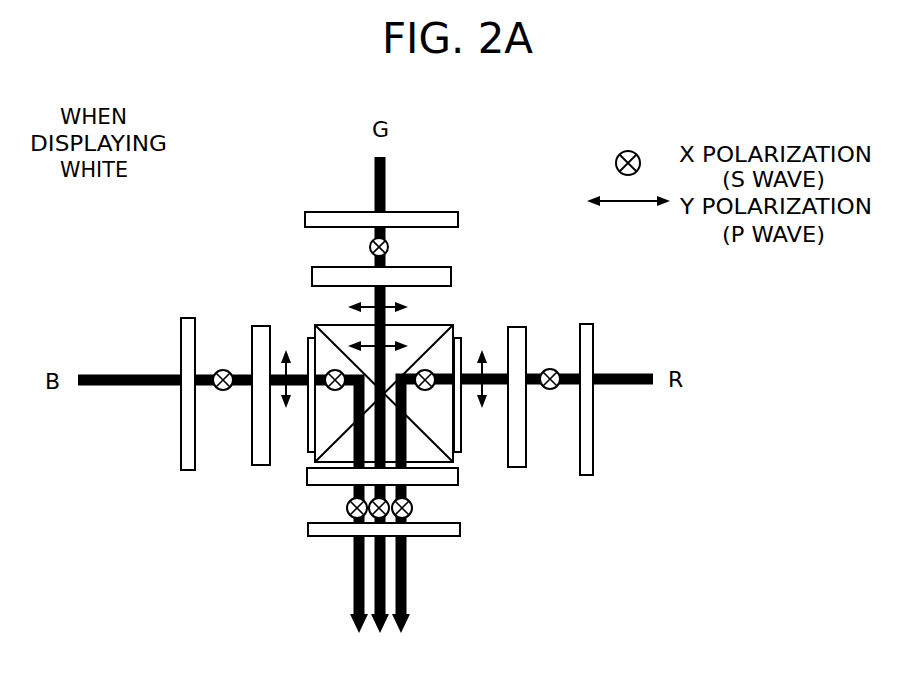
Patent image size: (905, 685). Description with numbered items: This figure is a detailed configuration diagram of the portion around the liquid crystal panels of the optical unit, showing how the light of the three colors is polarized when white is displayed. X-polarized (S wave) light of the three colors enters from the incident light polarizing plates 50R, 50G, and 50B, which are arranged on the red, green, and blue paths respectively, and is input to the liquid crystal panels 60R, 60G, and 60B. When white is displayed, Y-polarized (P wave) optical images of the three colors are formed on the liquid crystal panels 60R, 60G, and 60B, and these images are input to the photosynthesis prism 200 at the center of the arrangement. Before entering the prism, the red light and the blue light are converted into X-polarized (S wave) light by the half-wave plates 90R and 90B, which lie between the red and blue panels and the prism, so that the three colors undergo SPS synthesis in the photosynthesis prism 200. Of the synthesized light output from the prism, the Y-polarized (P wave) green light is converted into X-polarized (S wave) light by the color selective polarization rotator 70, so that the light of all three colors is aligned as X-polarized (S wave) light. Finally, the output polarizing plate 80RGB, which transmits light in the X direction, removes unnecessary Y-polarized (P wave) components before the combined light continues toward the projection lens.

The incident light polarizing plate 50G is at (305, 217).
The liquid crystal panel 60G is at (312, 272).
The photosynthesis prism 200 is at (425, 335).
The incident light polarizing plate 50B is at (180, 425).
The liquid crystal panel 60B is at (252, 425).
The λ/2 wave plate 90B is at (308, 425).
The λ/2 wave plate 90R is at (462, 430).
The liquid crystal panel 60R is at (526, 450).
The incident light polarizing plate 50R is at (593, 460).
The color selective polarization rotator 70 is at (458, 478).
The output polarizing plate 80RGB is at (442, 537).